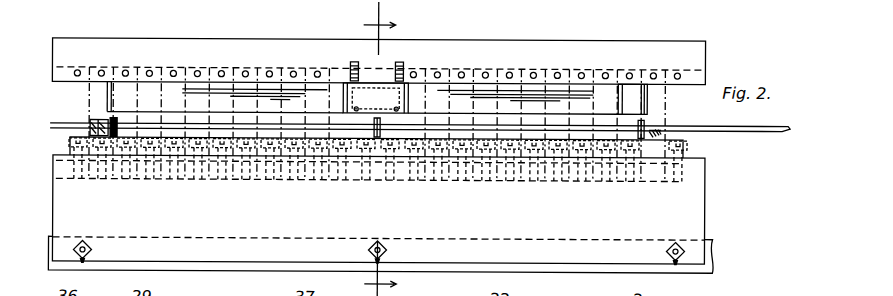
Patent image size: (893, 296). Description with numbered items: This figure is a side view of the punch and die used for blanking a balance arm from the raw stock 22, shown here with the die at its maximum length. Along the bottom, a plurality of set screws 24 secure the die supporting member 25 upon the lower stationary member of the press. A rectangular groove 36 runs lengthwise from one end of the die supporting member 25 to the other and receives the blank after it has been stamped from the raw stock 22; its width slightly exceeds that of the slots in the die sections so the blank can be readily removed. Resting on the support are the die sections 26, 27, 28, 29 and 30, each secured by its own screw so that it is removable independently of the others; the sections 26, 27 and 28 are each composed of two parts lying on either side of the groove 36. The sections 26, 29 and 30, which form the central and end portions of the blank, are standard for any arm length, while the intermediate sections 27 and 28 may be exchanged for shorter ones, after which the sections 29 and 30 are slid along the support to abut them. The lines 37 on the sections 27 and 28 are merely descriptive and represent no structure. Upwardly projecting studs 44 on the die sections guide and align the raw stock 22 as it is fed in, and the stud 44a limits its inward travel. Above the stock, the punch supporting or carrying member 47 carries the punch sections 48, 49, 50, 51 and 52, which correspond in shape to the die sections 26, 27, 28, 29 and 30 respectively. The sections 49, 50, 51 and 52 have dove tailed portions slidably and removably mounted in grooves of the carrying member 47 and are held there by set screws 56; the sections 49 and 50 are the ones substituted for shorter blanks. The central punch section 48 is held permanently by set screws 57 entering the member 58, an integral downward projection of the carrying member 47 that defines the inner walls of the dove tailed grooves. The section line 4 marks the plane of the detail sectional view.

The section line 4- 4 is at (380, 148).
The raw stock 22 is at (743, 133).
The set screws 24 is at (85, 259).
The die supporting member 25 is at (712, 241).
The die section 26 is at (376, 159).
The die section 27 is at (220, 147).
The die section 28 is at (518, 147).
The die section 29 is at (102, 147).
The die section 30 is at (662, 152).
The rectangular groove 36 is at (705, 183).
The descriptive lines 37 is at (522, 72).
The upwardly projecting studs 44 is at (110, 120).
The stud 44a is at (92, 128).
The punch supporting or carrying member 47 is at (560, 50).
The punch section 48 is at (375, 99).
The punch section 49 is at (225, 101).
The punch section 50 is at (513, 102).
The punch section 51 is at (117, 97).
The punch section 52 is at (647, 97).
The set screws 56 is at (232, 65).
The set screws 57 is at (355, 58).
The downwardly projecting member 58 is at (388, 53).